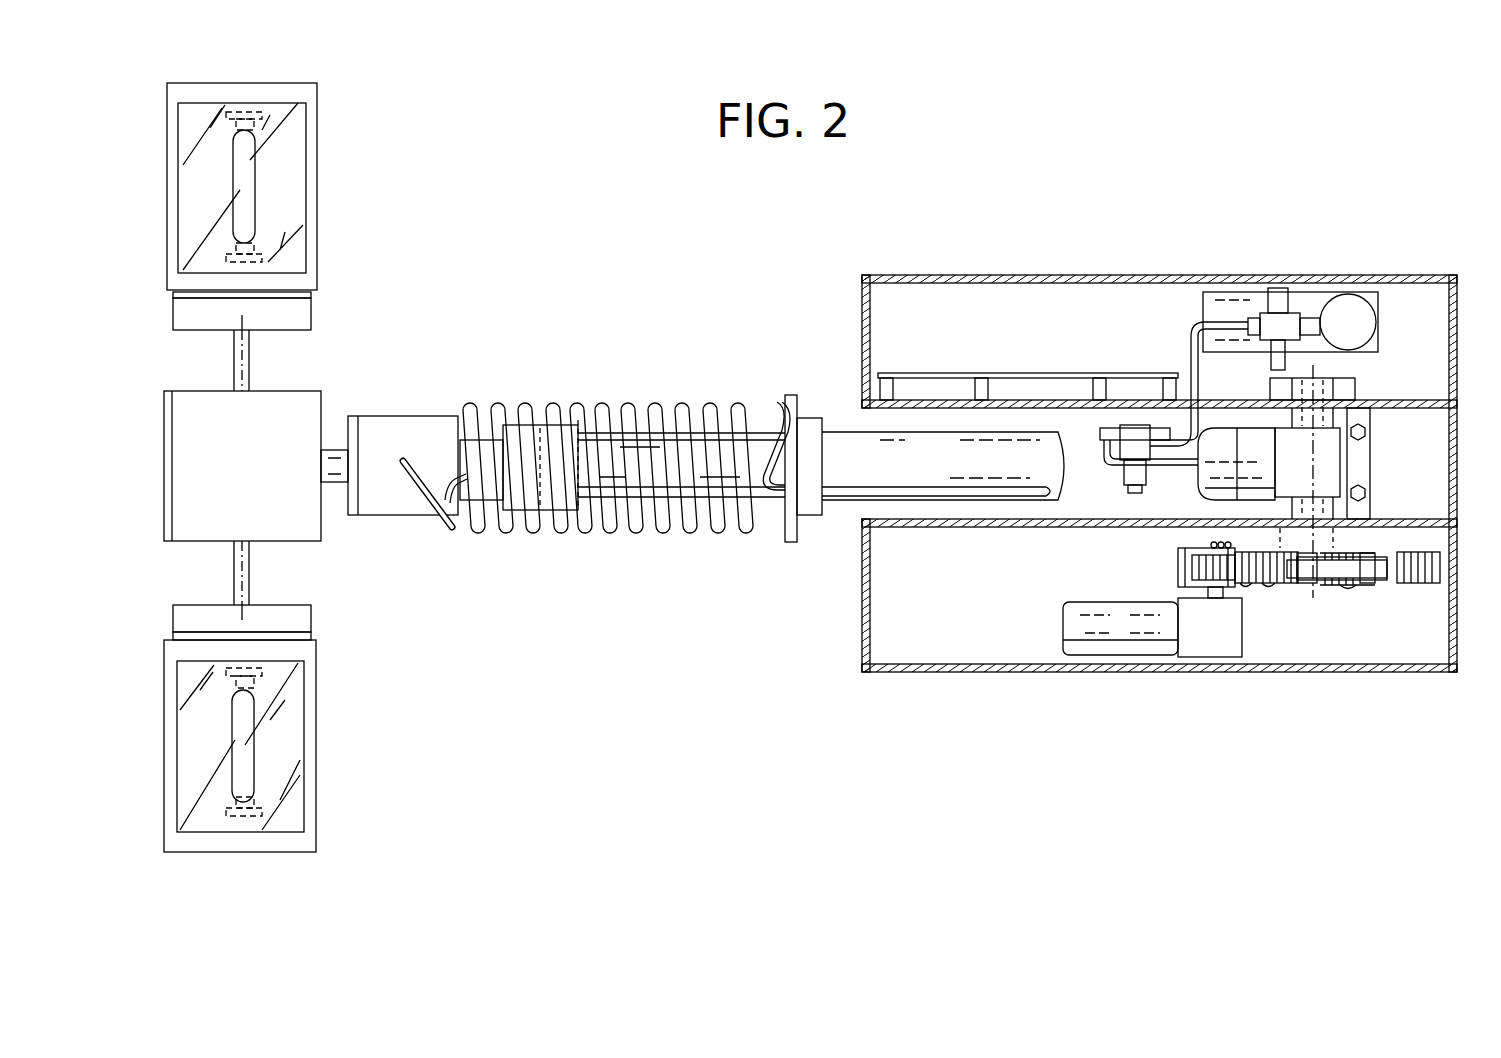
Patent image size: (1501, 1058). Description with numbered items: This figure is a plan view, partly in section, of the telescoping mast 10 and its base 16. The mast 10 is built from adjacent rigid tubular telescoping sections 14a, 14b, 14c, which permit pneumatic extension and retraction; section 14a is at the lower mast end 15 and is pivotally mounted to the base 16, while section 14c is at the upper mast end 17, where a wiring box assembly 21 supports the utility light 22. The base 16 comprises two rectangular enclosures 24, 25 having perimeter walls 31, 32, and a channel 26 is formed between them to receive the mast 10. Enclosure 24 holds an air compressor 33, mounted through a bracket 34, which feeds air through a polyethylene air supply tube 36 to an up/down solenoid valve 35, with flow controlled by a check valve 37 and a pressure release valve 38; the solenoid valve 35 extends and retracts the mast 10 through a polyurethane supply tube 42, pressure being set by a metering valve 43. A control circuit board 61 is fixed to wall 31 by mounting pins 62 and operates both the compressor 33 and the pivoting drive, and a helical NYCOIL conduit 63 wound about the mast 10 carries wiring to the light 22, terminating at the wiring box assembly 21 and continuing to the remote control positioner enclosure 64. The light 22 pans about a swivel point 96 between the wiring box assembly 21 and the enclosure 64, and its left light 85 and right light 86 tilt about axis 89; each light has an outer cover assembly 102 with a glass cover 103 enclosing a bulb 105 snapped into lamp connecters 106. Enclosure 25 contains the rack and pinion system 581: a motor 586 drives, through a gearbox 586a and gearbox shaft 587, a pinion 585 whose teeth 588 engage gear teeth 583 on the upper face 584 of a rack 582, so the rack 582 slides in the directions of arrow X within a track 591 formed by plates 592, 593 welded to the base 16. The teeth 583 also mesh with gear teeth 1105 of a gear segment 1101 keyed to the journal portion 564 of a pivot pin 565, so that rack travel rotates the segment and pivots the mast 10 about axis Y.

The telescoping mast 10 is at (650, 385).
The telescoping section 14a is at (838, 437).
The telescoping section 14b is at (517, 500).
The telescoping section 14c is at (448, 508).
The lower mast end 15 is at (1214, 442).
The base 16 is at (1135, 272).
The upper mast end 17 is at (468, 430).
The wiring box assembly 21 is at (383, 427).
The utility light 22 is at (353, 274).
The rectangular enclosure 24 is at (1017, 285).
The rectangular enclosure 25 is at (982, 662).
The channel 26 is at (862, 505).
The perimeter wall 31 is at (958, 275).
The perimeter wall 32 is at (920, 672).
The air compressor 33 is at (1237, 292).
The bracket 34 is at (1279, 293).
The up/down solenoid valve 35 is at (1126, 424).
The air supply tube 36 is at (1194, 318).
The check valve 37 is at (1287, 355).
The pressure release valve 38 is at (1302, 320).
The supply tube 42 is at (1162, 470).
The metering valve 43 is at (1162, 430).
The control circuit board 61 is at (1024, 373).
The mounting pins 62 is at (978, 390).
The NYCOIL conduit 63 is at (700, 400).
The remote control positioner enclosure 64 is at (275, 405).
The left light 85 is at (318, 745).
The right light 86 is at (322, 166).
The axis 89 is at (240, 347).
The swivel point 96 is at (335, 482).
The outer cover assembly 102 is at (320, 100).
The glass cover 103 is at (293, 238).
The bulb 105 is at (250, 212).
The lamp connecters 106 is at (262, 688).
The journal portion 564 is at (1322, 583).
The pivot pin 565 is at (1326, 418).
The rack and pinion system 581 is at (1407, 628).
The rack 582 is at (1252, 586).
The gear teeth 583 is at (1398, 527).
The upper face 584 is at (1427, 527).
The pinion 585 is at (1198, 578).
The motor 586 is at (1083, 645).
The gearbox 586a is at (1195, 645).
The gearbox shaft 587 is at (1193, 647).
The teeth 588 is at (1196, 567).
The track 591 is at (1273, 588).
The plate 592 is at (1383, 587).
The plate 593 is at (1375, 527).
The gear segment 1101 is at (1355, 587).
The gear teeth 1105 is at (1388, 568).
The arrow X is at (1148, 568).
The axis Y is at (1318, 370).